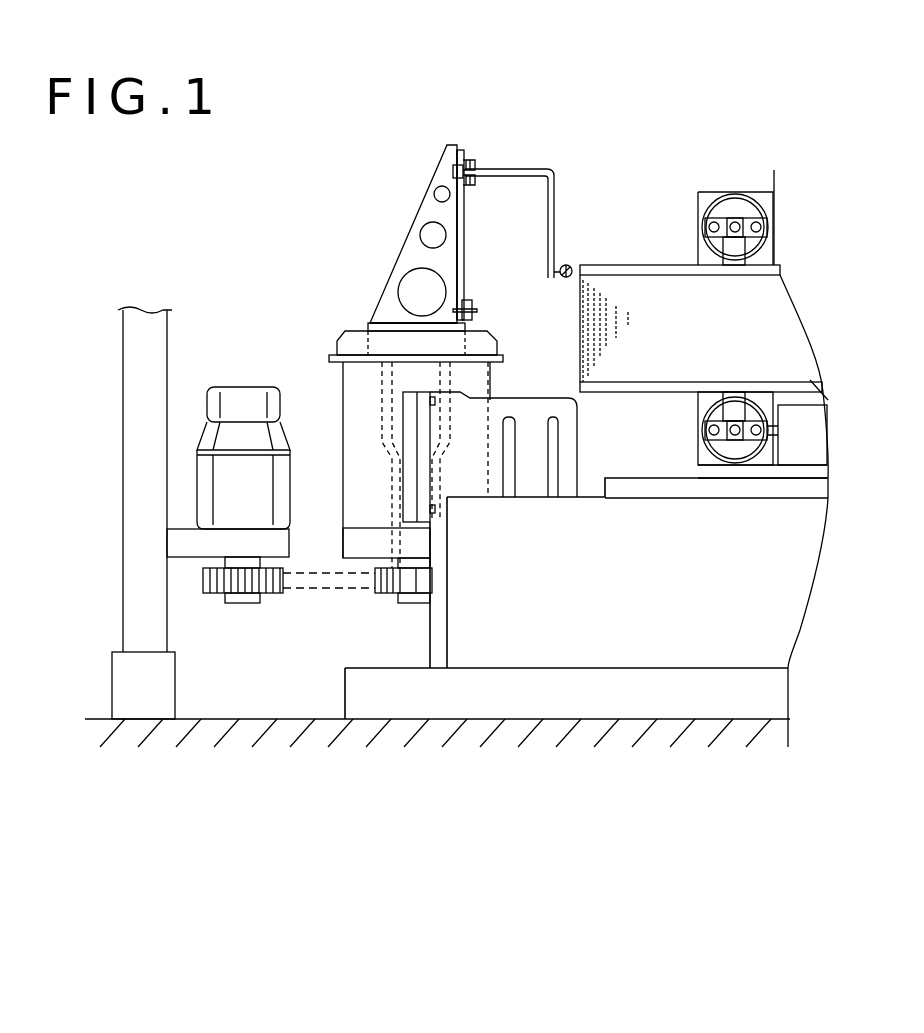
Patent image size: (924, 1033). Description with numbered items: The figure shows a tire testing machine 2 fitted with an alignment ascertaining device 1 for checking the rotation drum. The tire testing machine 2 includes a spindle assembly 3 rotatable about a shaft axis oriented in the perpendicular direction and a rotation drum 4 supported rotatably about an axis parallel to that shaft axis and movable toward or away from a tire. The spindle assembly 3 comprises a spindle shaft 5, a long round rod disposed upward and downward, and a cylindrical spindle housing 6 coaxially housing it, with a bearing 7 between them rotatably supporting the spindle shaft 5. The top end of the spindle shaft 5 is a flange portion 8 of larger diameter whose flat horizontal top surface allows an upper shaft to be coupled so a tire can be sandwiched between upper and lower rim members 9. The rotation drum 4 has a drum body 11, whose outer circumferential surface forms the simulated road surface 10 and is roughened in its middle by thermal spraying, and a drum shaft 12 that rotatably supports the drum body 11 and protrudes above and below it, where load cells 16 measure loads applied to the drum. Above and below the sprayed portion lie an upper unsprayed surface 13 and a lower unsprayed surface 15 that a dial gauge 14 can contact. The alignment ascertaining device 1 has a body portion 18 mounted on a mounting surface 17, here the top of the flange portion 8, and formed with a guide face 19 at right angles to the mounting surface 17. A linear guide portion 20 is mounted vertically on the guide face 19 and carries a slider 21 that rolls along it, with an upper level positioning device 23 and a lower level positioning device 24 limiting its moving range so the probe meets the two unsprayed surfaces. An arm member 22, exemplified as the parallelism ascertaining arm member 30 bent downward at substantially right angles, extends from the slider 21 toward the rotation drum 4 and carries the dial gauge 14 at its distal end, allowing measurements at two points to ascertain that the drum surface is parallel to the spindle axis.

The alignment ascertaining device 1 is at (394, 177).
The tire testing machine 2 is at (764, 142).
The spindle assembly 3 is at (315, 320).
The rotation drum 4 is at (607, 172).
The spindle shaft 5 is at (380, 407).
The spindle housing 6 is at (343, 380).
The bearing 7 is at (390, 470).
The flange portion 8 is at (368, 322).
The rim member 9 is at (493, 332).
The simulated road surface 10 is at (599, 297).
The drum body 11 is at (623, 283).
The drum shaft 12 is at (698, 240).
The upper unsprayed surface 13 is at (780, 272).
The dial gauge 14 is at (568, 264).
The lower unsprayed surface 15 is at (828, 400).
The load cell 16 is at (735, 195).
The mounting surface 17 is at (390, 322).
The body portion 18 is at (425, 218).
The guide face 19 is at (462, 215).
The linear guide portion 20 is at (466, 245).
The slider 21 is at (467, 160).
The arm member 22 is at (520, 172).
The upper level positioning device 23 is at (452, 170).
The lower level positioning device 24 is at (473, 305).
The parallelism ascertaining arm member 30 is at (531, 195).